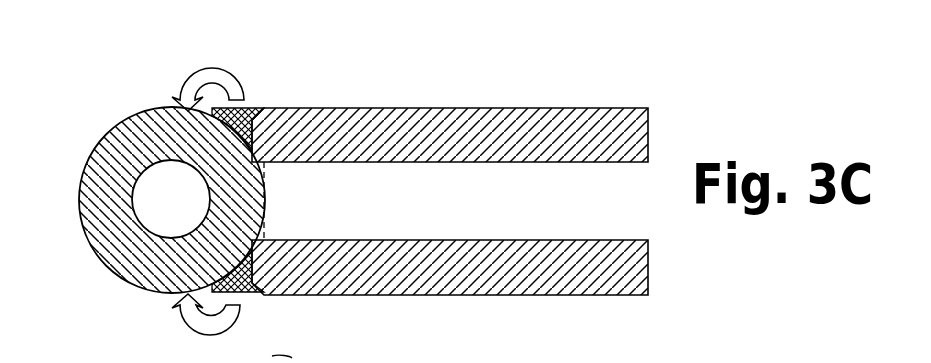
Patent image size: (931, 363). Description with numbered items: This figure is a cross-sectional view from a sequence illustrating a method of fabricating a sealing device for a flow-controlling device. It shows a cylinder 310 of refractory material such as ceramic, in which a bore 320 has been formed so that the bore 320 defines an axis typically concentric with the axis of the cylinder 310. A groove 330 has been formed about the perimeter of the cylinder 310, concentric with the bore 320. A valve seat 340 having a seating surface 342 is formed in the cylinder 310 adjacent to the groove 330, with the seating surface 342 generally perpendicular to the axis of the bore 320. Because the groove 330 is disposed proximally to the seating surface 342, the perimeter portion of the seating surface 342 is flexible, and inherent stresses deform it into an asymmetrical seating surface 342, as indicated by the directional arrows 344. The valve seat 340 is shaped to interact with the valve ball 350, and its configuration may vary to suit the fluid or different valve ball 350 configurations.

The cylinder 310 is at (626, 122).
The bore 320 is at (627, 205).
The groove 330 is at (250, 108).
The valve seat 340 is at (262, 128).
The seating surface 342 is at (263, 228).
The directional arrows 344 is at (208, 70).
The valve ball 350 is at (117, 247).